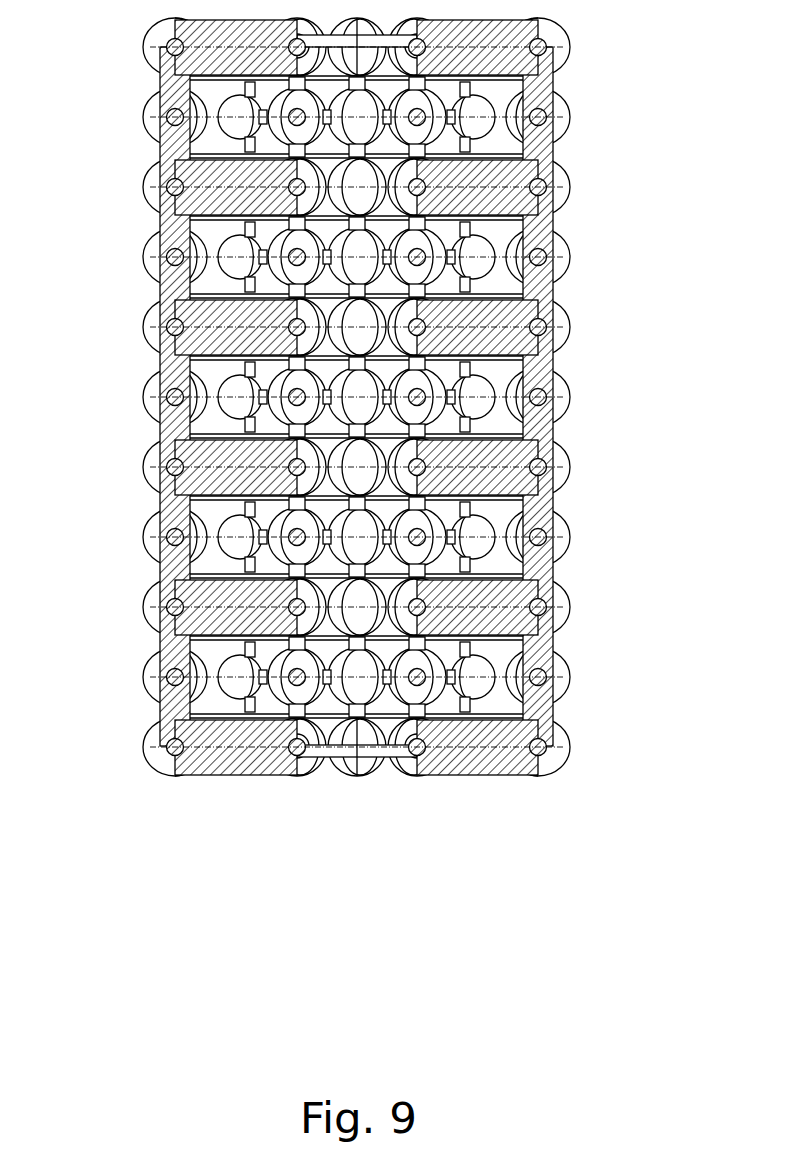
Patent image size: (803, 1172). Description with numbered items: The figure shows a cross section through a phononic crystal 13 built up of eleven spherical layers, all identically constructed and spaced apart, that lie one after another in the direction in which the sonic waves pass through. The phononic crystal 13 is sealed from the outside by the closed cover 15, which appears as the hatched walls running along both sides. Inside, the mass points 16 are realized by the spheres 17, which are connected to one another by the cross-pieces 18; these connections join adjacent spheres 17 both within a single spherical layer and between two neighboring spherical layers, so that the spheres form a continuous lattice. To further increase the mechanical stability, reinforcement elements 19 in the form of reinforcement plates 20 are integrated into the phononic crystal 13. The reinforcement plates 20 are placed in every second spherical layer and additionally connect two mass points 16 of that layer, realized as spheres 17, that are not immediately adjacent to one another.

The phononic crystal 13 is at (384, 392).
The closed cover 15 is at (538, 370).
The mass point 16 is at (448, 397).
The sphere 17 is at (468, 533).
The cross-piece 18 is at (327, 530).
The reinforcement element 19 is at (464, 397).
The reinforcement plate 20 is at (508, 197).